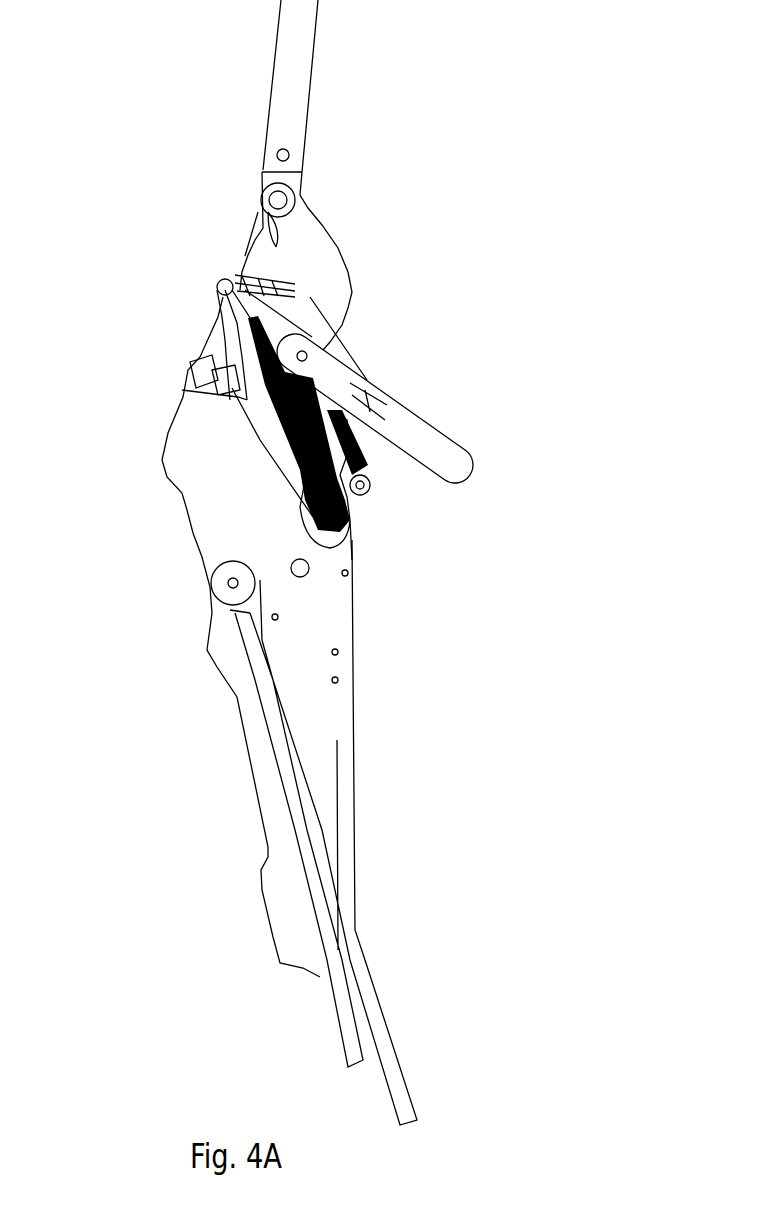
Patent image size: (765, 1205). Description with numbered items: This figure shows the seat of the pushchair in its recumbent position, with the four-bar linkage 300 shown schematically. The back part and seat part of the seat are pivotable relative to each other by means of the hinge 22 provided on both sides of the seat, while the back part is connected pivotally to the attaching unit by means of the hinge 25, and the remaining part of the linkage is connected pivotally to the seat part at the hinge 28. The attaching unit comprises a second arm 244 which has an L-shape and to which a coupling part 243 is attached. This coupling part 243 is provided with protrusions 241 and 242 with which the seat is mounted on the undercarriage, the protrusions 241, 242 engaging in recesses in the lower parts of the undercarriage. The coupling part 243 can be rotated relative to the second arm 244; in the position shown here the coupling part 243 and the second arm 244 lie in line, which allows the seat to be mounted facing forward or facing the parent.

The hinge 28 is at (220, 292).
The four-bar linkage 300 is at (258, 345).
The protrusion 242 is at (287, 413).
The hinge 22 is at (255, 425).
The protrusion 241 is at (355, 480).
The hinge 25 is at (318, 522).
The second arm 244 is at (308, 537).
The coupling part 243 is at (334, 459).